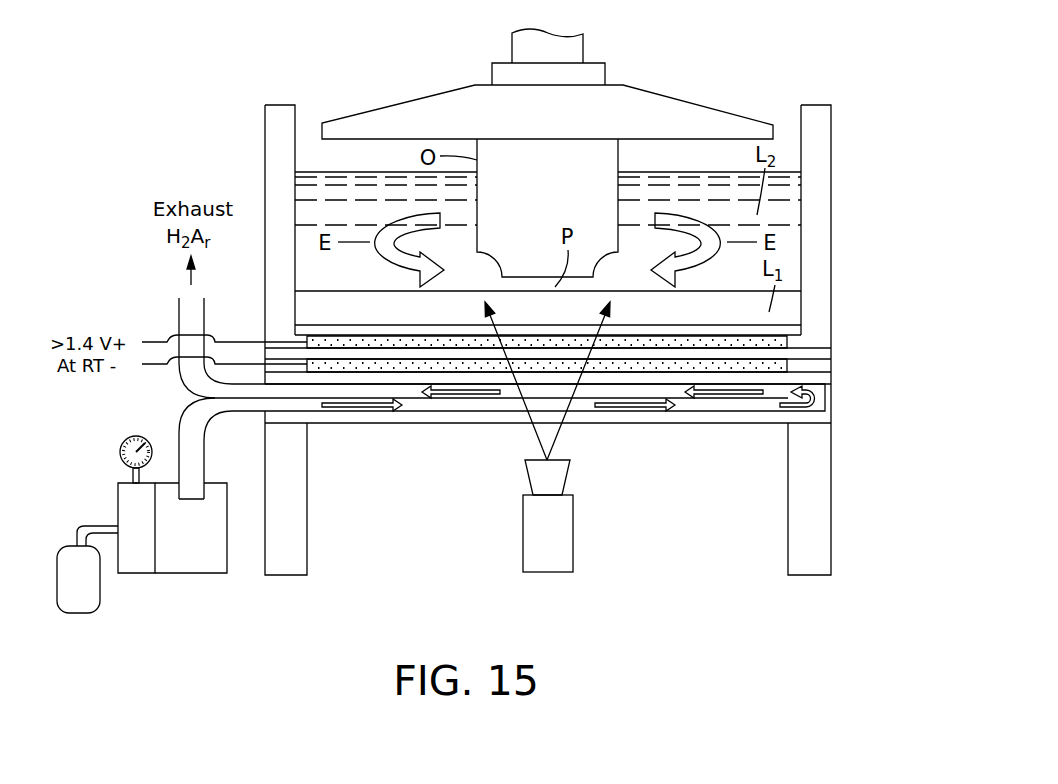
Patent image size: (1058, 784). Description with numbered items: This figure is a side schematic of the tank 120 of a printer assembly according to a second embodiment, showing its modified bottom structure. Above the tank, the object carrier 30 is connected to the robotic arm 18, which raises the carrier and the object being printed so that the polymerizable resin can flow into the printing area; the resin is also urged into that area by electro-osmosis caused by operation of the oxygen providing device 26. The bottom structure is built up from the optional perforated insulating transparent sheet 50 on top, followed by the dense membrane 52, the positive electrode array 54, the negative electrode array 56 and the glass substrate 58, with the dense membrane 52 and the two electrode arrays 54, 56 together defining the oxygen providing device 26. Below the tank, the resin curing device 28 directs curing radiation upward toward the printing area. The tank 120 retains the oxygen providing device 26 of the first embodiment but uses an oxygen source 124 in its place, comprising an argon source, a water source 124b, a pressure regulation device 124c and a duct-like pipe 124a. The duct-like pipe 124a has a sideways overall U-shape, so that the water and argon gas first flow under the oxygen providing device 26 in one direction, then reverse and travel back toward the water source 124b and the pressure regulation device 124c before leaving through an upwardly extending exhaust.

The robotic arm 18 is at (512, 51).
The object carrier 30 is at (388, 108).
The tank 120 is at (842, 211).
The perforated insulating transparent sheet 50 is at (325, 330).
The oxygen providing device 26 is at (612, 335).
The positive electrode array 54 is at (788, 345).
The dense membrane 52 is at (823, 355).
The negative electrode array 56 is at (790, 367).
The glass substrate 58 is at (589, 374).
The oxygen source 124 is at (137, 513).
The duct-like pipe 124a is at (695, 412).
The water source 124b is at (193, 575).
The pressure regulation device 124c is at (132, 575).
The resin curing device 28 is at (559, 547).